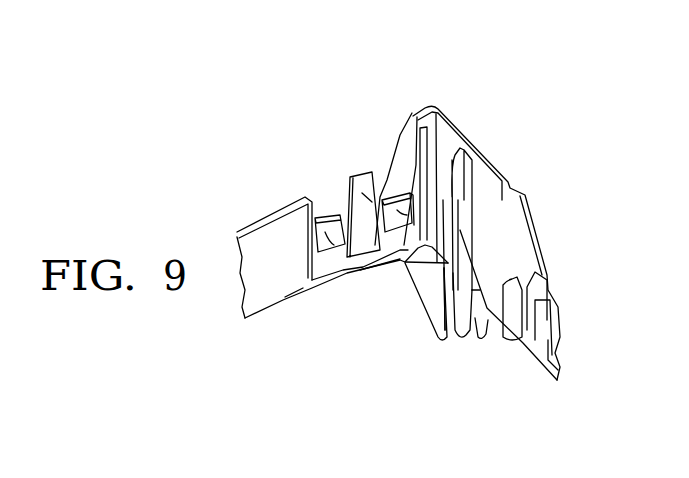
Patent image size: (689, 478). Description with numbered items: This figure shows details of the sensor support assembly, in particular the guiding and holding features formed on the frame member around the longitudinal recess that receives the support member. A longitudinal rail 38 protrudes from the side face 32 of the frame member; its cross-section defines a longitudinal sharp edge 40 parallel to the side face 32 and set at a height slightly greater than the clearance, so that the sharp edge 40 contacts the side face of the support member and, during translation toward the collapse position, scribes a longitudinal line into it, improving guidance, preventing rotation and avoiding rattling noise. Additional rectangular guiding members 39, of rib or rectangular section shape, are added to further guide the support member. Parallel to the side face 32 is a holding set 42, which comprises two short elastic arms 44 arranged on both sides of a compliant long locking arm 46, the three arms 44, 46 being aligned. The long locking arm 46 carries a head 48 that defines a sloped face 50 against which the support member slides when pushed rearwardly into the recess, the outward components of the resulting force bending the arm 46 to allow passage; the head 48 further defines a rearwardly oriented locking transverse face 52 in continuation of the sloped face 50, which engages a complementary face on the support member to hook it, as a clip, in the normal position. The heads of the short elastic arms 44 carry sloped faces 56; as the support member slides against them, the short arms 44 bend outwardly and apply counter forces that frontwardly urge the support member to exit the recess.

The side face 32 is at (486, 200).
The longitudinal rail 38 is at (437, 344).
The longitudinal sharp edge 40 is at (437, 262).
The rectangular guiding member 39 is at (502, 183).
The holding set 42 is at (273, 107).
The short elastic arm 44 is at (328, 216).
The long locking arm 46 is at (358, 173).
The head 48 is at (418, 358).
The sloped face 50 is at (383, 263).
The locking transverse face 52 is at (342, 267).
The sloped face 56 is at (412, 113).